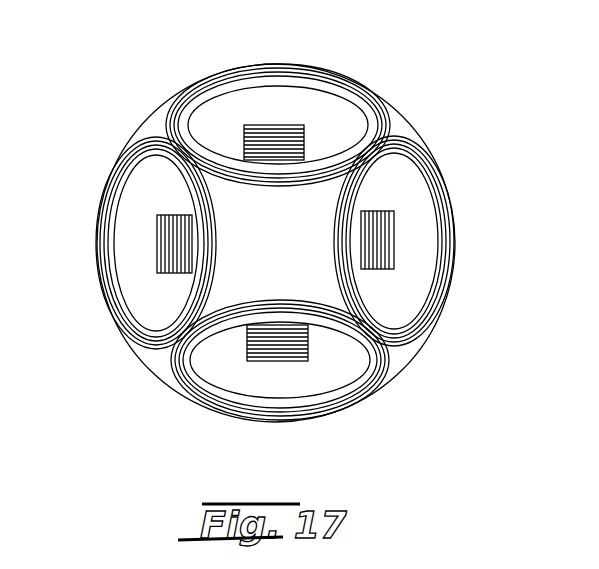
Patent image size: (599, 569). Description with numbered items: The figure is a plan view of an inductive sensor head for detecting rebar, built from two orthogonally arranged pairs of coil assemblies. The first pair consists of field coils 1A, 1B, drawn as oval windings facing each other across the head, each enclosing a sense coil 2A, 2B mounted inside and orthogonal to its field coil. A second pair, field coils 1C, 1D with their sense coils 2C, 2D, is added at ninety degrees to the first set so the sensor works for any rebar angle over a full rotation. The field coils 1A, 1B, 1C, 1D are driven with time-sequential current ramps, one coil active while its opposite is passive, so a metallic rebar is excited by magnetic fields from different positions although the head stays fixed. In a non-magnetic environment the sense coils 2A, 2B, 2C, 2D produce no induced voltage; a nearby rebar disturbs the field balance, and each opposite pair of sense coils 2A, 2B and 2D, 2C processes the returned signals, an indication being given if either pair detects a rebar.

The field coil 1A is at (130, 160).
The field coil 1B is at (415, 330).
The field coil 1C is at (367, 102).
The field coil 1D is at (178, 375).
The sense coil 2A is at (167, 233).
The sense coil 2B is at (392, 265).
The sense coil 2C is at (305, 128).
The sense coil 2D is at (250, 356).